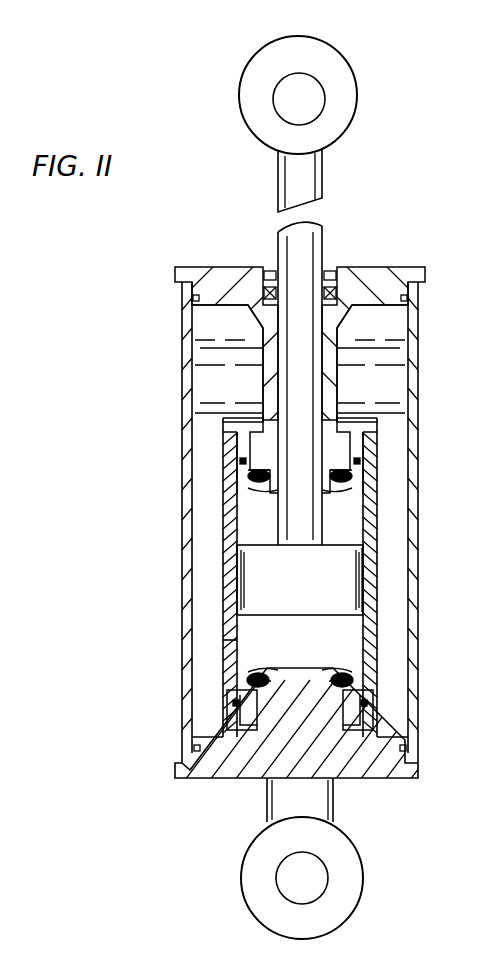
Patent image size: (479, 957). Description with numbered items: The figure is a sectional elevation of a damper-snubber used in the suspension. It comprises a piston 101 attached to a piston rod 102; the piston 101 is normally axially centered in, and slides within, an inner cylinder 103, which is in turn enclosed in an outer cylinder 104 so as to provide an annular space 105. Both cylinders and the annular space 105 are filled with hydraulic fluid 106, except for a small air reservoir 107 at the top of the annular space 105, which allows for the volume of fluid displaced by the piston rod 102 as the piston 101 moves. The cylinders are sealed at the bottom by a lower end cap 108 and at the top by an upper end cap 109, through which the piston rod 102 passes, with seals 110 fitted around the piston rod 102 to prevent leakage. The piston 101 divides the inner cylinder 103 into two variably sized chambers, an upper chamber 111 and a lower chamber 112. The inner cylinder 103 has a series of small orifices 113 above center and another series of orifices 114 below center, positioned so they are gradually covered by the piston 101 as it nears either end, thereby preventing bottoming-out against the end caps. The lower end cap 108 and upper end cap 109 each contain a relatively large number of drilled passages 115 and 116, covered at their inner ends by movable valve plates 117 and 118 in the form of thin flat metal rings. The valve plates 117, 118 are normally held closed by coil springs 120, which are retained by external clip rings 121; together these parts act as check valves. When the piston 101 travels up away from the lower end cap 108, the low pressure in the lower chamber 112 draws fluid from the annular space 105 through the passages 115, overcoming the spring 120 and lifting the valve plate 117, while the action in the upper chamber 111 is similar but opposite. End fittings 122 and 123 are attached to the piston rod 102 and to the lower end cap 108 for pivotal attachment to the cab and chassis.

The piston 101 is at (314, 585).
The piston rod 102 is at (318, 211).
The inner cylinder 103 is at (225, 568).
The outer cylinder 104 is at (186, 418).
The annular space 105 is at (209, 448).
The hydraulic fluid 106 is at (204, 372).
The air reservoir 107 is at (203, 328).
The lower end cap 108 is at (182, 770).
The upper end cap 109 is at (214, 277).
The seals 110 is at (338, 268).
The upper chamber 111 is at (255, 527).
The lower chamber 112 is at (314, 650).
The orifices 113 is at (225, 512).
The orifices 114 is at (225, 647).
The drilled passages 115 is at (372, 725).
The drilled passages 116 is at (348, 426).
The valve plate 117 is at (355, 690).
The valve plate 118 is at (370, 470).
The springs 120 is at (352, 478).
The clip ring 121 is at (345, 483).
The end fitting 122 is at (337, 119).
The end fitting 123 is at (333, 857).